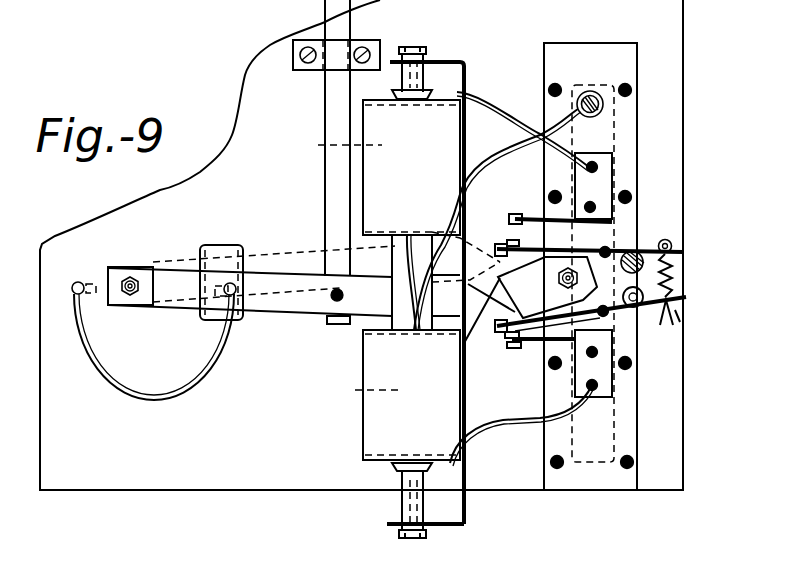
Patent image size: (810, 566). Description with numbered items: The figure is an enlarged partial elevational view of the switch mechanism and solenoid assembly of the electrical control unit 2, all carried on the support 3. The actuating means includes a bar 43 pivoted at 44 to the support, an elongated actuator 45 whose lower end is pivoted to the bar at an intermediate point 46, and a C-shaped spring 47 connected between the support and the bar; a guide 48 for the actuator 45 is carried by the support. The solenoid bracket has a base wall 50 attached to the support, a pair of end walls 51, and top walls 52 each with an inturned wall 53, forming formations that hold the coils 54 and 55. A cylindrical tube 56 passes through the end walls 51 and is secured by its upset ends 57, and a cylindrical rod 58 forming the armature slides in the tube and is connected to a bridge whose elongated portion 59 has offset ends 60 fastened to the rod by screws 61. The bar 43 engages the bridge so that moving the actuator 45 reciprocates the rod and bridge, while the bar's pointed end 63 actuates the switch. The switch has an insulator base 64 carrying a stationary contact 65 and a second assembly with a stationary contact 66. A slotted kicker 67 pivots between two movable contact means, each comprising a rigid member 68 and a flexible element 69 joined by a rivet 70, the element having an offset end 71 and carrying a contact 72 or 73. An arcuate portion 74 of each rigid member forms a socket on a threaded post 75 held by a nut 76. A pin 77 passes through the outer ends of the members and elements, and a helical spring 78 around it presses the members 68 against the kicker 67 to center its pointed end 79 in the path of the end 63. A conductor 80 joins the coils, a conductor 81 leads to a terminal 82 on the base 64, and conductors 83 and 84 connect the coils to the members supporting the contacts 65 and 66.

The electrical control unit 2 is at (241, 69).
The support 3 is at (114, 224).
The bar 43 is at (282, 306).
The pivot 44 is at (134, 278).
The actuator 45 is at (324, 118).
The intermediate pivot point 46 is at (334, 300).
The C-shaped spring 47 is at (100, 380).
The guide 48 is at (303, 70).
The base wall 50 is at (367, 324).
The end walls 51 is at (379, 101).
The top walls 52 is at (353, 413).
The inturned wall 53 is at (383, 237).
The coil 54 is at (337, 146).
The coil 55 is at (367, 388).
The cylindrical tube 56 is at (408, 99).
The upset tube ends 57 is at (450, 91).
The cylindrical rod 58 is at (440, 62).
The elongated portion of bridge 59 is at (470, 508).
The offset ends 60 is at (398, 55).
The screws 61 is at (425, 54).
The pointed end 63 is at (472, 314).
The insulator base 64 is at (622, 66).
The stationary contact 65 is at (521, 213).
The stationary contact 66 is at (522, 344).
The kicker 67 is at (547, 287).
The rigid member 68 is at (500, 247).
The resiliently flexible element 69 is at (558, 249).
The rivet 70 is at (612, 250).
The offset end 71 is at (504, 256).
The contact 72 is at (502, 228).
The contact 73 is at (505, 334).
The arcuate portion 74 is at (676, 283).
The threaded post 75 is at (668, 240).
The nut 76 is at (681, 313).
The pin 77 is at (673, 248).
The helical spring 78 is at (645, 263).
The pointed end of kicker 79 is at (463, 352).
The conductor 80 is at (418, 307).
The conductor 81 is at (506, 150).
The terminal 82 is at (604, 105).
The conductor 83 is at (493, 112).
The conductor 84 is at (526, 426).